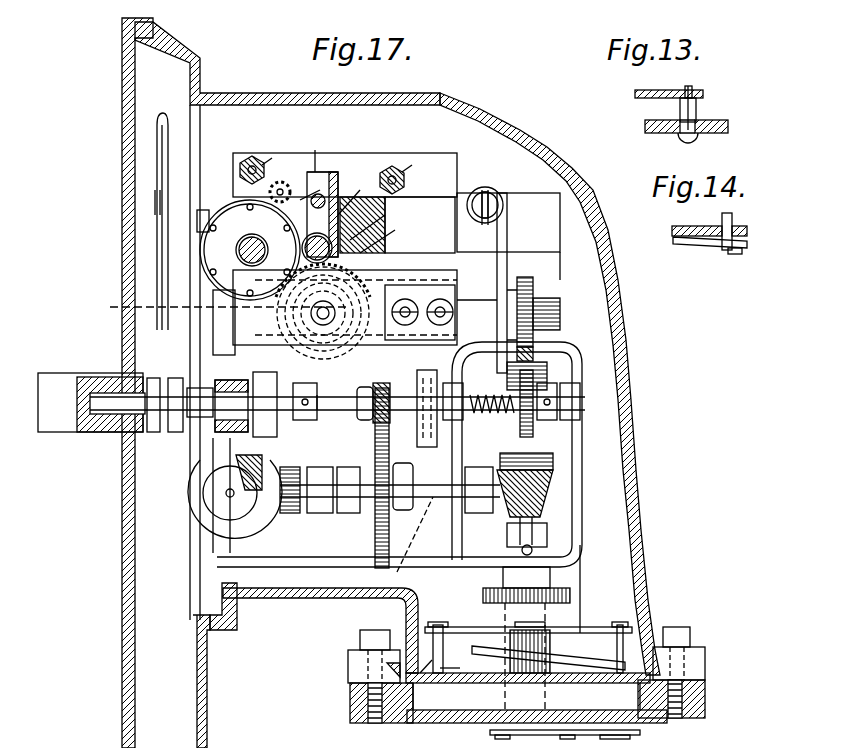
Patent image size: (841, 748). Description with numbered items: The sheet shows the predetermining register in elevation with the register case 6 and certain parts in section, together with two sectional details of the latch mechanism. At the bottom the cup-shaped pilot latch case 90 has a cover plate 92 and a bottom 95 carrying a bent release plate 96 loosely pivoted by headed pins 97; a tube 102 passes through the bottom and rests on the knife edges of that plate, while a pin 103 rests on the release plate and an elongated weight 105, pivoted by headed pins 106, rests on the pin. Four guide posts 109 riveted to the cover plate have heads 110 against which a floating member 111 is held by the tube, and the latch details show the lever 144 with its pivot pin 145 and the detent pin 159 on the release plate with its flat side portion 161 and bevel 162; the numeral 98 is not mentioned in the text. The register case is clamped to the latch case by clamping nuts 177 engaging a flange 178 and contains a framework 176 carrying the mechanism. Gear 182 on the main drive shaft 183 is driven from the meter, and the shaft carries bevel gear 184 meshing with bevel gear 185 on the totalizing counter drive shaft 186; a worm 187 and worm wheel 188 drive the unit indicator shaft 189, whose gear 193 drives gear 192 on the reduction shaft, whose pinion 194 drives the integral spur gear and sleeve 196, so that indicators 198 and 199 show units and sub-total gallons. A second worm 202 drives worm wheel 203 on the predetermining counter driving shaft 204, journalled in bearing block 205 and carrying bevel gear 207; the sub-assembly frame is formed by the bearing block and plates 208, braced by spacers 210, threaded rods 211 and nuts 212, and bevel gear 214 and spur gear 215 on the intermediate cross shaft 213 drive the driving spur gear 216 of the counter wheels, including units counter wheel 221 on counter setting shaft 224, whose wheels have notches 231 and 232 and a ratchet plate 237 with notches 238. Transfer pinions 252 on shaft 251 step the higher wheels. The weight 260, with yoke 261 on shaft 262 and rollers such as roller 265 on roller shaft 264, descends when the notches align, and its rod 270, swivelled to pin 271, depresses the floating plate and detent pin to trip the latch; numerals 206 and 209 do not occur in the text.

In FIG. 17, the register case 6 is at (631, 392).
In FIG. 17, the pilot latch case 90 is at (663, 708).
In FIG. 17, the cover plate 92 is at (445, 674).
In FIG. 13, the bottom of the case 95 is at (684, 137).
In FIG. 14, the bottom of the case 95 is at (747, 232).
In FIG. 14, the release plate 96 is at (740, 252).
In FIG. 17, the headed pins 97 is at (566, 735).
In FIG. 17, the bottom bar support 98 is at (618, 740).
In FIG. 17, the tube 102 is at (512, 640).
In FIG. 17, the pin 103 is at (600, 697).
In FIG. 17, the weight 105 is at (470, 697).
In FIG. 17, the headed pins 106 is at (617, 663).
In FIG. 17, the guide posts 109 is at (432, 662).
In FIG. 17, the heads 110 is at (438, 626).
In FIG. 17, the floating member 111 is at (581, 628).
In FIG. 13, the lever 144 is at (640, 92).
In FIG. 13, the pivot pin 145 is at (698, 107).
In FIG. 14, the detent pin 159 is at (718, 250).
In FIG. 14, the flat side portion 161 is at (733, 224).
In FIG. 14, the bevel 162 is at (718, 222).
In FIG. 17, the framework 176 is at (330, 599).
In FIG. 17, the clamping nuts 177 is at (350, 656).
In FIG. 17, the flange 178 is at (385, 668).
In FIG. 17, the gear 182 is at (484, 597).
In FIG. 17, the main drive shaft 183 is at (533, 495).
In FIG. 17, the bevel gear 184 is at (554, 470).
In FIG. 17, the bevel gear 185 is at (496, 470).
In FIG. 17, the totalizing counter drive shaft 186 is at (507, 535).
In FIG. 17, the worm 187 is at (549, 368).
In FIG. 17, the worm wheel 188 is at (556, 430).
In FIG. 17, the unit indicator shaft 189 is at (327, 412).
In FIG. 17, the gear 192 is at (372, 546).
In FIG. 17, the gear 193 is at (392, 392).
In FIG. 17, the pinion 194 is at (288, 508).
In FIG. 17, the integral spur gear and sleeve 196 is at (300, 442).
In FIG. 17, the indicator 198 is at (164, 118).
In FIG. 17, the indicator 199 is at (192, 232).
In FIG. 17, the second worm 202 is at (562, 311).
In FIG. 17, the worm wheel 203 is at (545, 284).
In FIG. 17, the predetermining counter driving shaft 204 is at (492, 302).
In FIG. 17, the bearing block 205 is at (450, 305).
In FIG. 17, the gear 206 is at (372, 412).
In FIG. 17, the bevel gear 207 is at (358, 352).
In FIG. 17, the plates 208 is at (313, 152).
In FIG. 17, the plate 209 is at (497, 272).
In FIG. 17, the spacers 210 is at (253, 158).
In FIG. 17, the threaded rods 211 is at (244, 162).
In FIG. 17, the nuts 212 is at (283, 153).
In FIG. 17, the intermediate cross shaft 213 is at (385, 287).
In FIG. 17, the bevel gear 214 is at (376, 229).
In FIG. 17, the spur gear 215 is at (378, 243).
In FIG. 17, the driving spur gear 216 is at (118, 307).
In FIG. 17, the units counter wheel 221 is at (160, 200).
In FIG. 17, the counter setting shaft 224 is at (215, 250).
In FIG. 17, the notch 231 is at (266, 249).
In FIG. 17, the notch 232 is at (330, 175).
In FIG. 17, the ratchet plate 237 is at (338, 180).
In FIG. 17, the notches 238 is at (338, 212).
In FIG. 17, the shaft 251 is at (278, 222).
In FIG. 17, the transfer pinions 252 is at (280, 182).
In FIG. 17, the weight 260 is at (508, 198).
In FIG. 17, the yoke 261 is at (318, 172).
In FIG. 17, the shaft 262 is at (300, 215).
In FIG. 17, the roller shaft 264 is at (372, 214).
In FIG. 17, the roller 265 is at (303, 256).
In FIG. 17, the rod 270 is at (502, 302).
In FIG. 17, the pin 271 is at (483, 190).